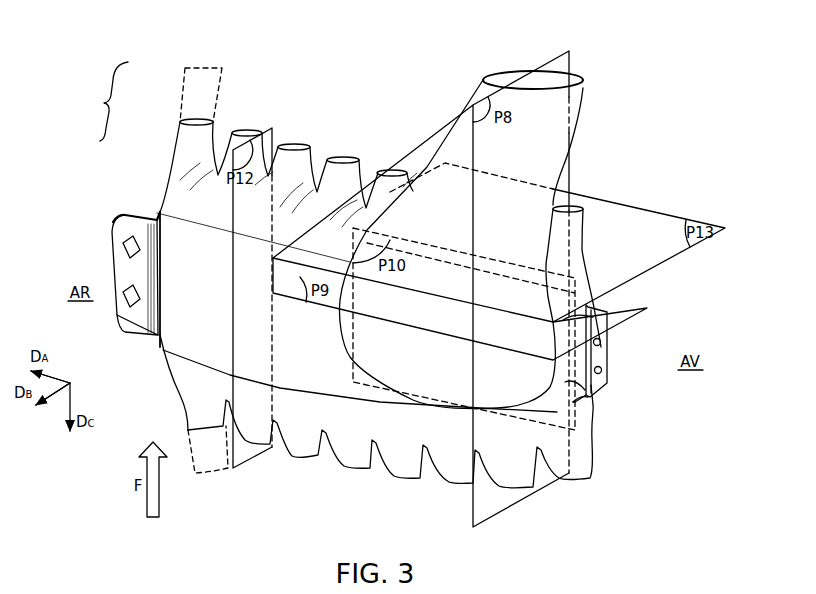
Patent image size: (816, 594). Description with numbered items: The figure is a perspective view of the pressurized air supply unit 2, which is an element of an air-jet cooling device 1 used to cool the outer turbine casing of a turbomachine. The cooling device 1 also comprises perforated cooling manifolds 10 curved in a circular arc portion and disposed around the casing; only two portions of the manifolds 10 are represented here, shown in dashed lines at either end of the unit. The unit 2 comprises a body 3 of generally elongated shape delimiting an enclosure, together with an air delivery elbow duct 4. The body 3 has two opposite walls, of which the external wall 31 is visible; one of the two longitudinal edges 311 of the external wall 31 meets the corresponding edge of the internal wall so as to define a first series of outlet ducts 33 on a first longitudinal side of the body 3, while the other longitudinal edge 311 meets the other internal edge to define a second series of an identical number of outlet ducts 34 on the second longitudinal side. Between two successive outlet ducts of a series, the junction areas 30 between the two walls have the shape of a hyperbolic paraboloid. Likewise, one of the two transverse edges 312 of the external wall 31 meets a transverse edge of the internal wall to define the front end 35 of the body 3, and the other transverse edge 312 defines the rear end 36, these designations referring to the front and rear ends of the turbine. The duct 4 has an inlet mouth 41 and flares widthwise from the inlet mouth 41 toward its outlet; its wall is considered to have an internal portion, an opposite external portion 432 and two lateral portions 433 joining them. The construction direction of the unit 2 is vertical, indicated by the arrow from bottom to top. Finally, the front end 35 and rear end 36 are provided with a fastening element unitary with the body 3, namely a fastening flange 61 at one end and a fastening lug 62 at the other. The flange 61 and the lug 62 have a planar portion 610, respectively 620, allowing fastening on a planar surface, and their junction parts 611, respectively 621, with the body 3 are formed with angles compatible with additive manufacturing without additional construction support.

The air-jet cooling device 1 is at (111, 101).
The pressurized air supply unit 2 is at (168, 152).
The body 3 is at (158, 382).
The air delivery elbow duct 4 is at (457, 112).
The perforated cooling manifold 10 is at (197, 93).
The junction area 30 is at (216, 150).
The external wall 31 is at (302, 362).
The outlet duct of the first series 33 is at (288, 172).
The outlet duct of the second series 34 is at (402, 472).
The front end 35 is at (600, 306).
The rear end 36 is at (186, 297).
The inlet mouth 41 is at (533, 80).
The fastening flange 61 is at (613, 336).
The fastening lug 62 is at (109, 268).
The longitudinal edge of the external wall 311 is at (321, 152).
The transverse edge of the external wall 312 is at (180, 230).
The external portion of the duct wall 432 is at (438, 367).
The lateral portion of the duct wall 433 is at (601, 350).
The planar portion of the flange 610 is at (601, 366).
The junction part of the flange 611 is at (597, 393).
The planar portion of the lug 620 is at (140, 320).
The junction part of the lug 621 is at (170, 314).